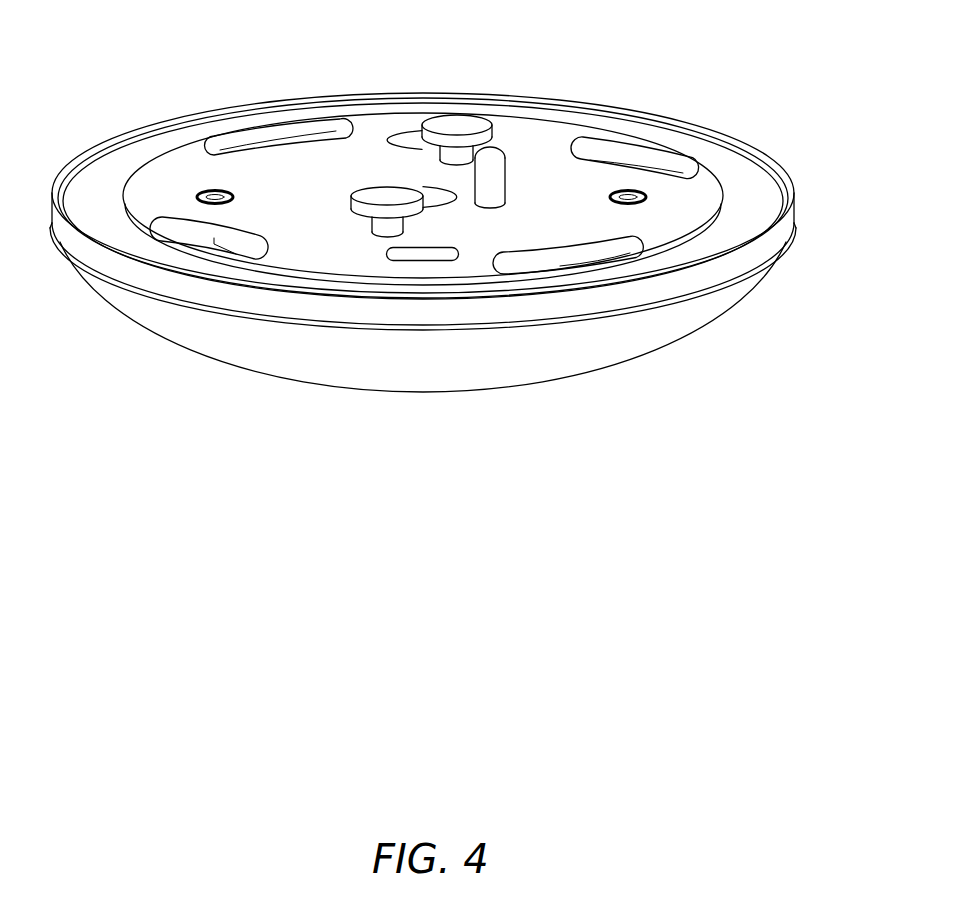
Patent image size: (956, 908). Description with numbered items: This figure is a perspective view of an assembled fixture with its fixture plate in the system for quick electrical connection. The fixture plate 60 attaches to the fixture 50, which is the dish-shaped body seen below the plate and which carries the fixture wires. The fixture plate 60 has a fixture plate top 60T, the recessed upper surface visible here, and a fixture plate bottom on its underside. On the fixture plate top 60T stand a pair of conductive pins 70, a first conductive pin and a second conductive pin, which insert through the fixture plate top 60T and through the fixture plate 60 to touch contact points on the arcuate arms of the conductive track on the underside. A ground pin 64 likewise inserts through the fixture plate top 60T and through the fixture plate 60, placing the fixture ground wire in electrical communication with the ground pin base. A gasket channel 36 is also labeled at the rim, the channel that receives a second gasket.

The fixture 50 is at (653, 325).
The fixture plate 60 is at (687, 142).
The fixture plate top 60T is at (360, 128).
The gasket channel 36 is at (757, 200).
The conductive pins 70 is at (395, 190).
The ground pin 64 is at (508, 172).